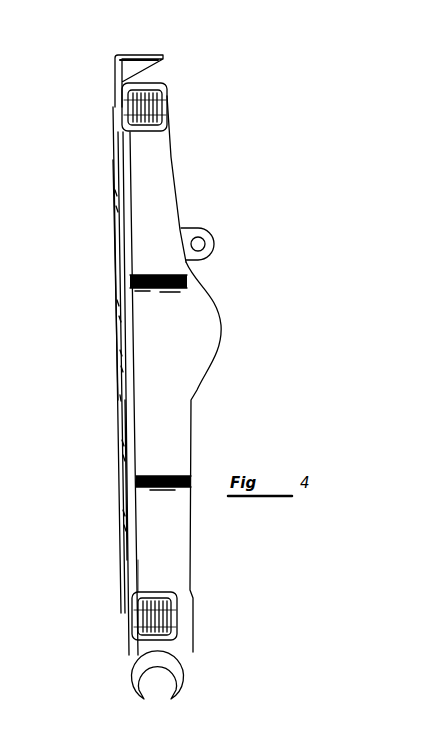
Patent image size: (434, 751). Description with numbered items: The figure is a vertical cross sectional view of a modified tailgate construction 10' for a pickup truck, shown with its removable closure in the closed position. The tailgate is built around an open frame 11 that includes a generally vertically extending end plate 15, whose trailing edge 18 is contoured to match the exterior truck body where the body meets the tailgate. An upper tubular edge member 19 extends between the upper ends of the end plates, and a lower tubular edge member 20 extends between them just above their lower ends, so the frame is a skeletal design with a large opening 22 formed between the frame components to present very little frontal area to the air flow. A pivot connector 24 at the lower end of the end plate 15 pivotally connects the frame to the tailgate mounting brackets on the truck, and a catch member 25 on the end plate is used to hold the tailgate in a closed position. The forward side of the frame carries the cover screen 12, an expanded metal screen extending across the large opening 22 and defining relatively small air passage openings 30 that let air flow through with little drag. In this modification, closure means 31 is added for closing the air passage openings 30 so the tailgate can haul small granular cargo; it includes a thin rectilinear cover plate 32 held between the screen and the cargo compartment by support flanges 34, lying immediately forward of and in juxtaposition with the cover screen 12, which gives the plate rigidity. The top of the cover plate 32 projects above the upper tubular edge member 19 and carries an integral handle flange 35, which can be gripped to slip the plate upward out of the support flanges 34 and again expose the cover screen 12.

The tailgate construction 10' is at (184, 371).
The open frame 11 is at (182, 176).
The cover screen 12 is at (133, 252).
The end plate 15 is at (189, 460).
The trailing edge 18 is at (220, 337).
The upper tubular edge member 19 is at (152, 84).
The lower tubular edge member 20 is at (178, 612).
The large opening 22 is at (166, 565).
The pivot connector 24 is at (186, 674).
The catch member 25 is at (198, 233).
The air passage openings 30 is at (130, 206).
The closure means 31 is at (118, 305).
The cover plate 32 is at (118, 250).
The support flange 34 is at (125, 418).
The handle flange 35 is at (150, 47).